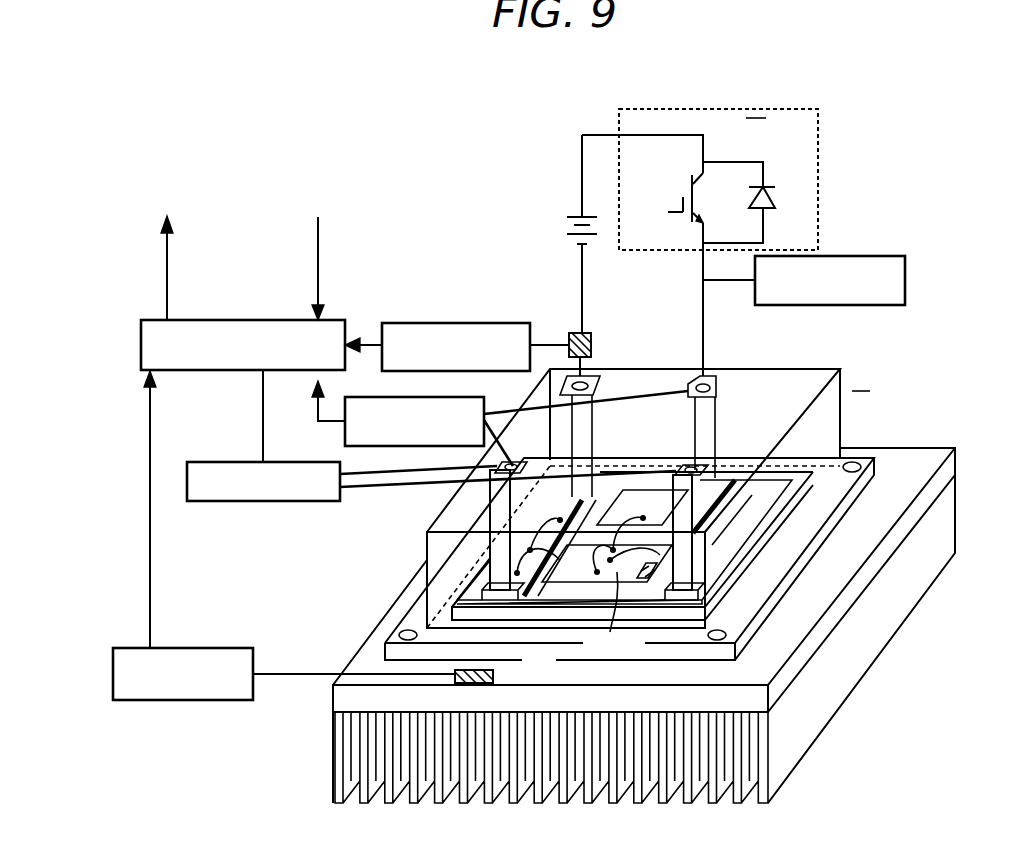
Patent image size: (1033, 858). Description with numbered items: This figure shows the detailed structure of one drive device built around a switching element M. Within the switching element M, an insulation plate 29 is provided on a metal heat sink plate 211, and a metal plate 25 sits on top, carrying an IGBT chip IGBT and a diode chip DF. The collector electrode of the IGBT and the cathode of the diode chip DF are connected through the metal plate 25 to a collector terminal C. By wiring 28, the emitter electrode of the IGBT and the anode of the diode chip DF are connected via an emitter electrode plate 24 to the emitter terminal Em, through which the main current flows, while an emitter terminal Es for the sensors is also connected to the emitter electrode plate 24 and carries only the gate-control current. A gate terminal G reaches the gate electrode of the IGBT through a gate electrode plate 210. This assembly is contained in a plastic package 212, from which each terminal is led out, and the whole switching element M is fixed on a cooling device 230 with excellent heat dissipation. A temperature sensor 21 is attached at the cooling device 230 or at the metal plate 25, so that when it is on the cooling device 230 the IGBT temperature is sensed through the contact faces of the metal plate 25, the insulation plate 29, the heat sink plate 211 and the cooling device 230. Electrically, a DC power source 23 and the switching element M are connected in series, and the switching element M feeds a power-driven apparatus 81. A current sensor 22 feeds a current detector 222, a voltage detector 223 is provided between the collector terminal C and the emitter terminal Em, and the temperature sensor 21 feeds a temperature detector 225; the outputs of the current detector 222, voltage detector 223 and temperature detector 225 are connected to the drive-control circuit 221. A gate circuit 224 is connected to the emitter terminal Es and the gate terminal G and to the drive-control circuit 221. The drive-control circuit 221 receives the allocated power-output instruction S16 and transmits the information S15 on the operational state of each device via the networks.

The information on operational state of each device S15 is at (207, 128).
The allocated power-output instruction S16 is at (337, 143).
The drive-control circuit 221 is at (211, 318).
The current detector 222 is at (411, 322).
The voltage detector 223 is at (345, 423).
The gate circuit 224 is at (217, 502).
The temperature detector 225 is at (225, 648).
The current sensor 22 is at (588, 332).
The DC power source 23 is at (573, 240).
The power-driven apparatus 81 is at (872, 256).
The plastic package 212 is at (785, 368).
The cooling device 230 is at (918, 450).
The insulation plate 29 is at (783, 488).
The gate electrode plate 210 is at (725, 543).
The metal heat sink plate 211 is at (740, 600).
The emitter electrode plate 24 is at (490, 510).
The wiring 28 is at (493, 560).
The metal plate 25 is at (560, 588).
The temperature sensor 21 is at (495, 676).
The collector terminal C is at (707, 376).
The gate terminal G is at (705, 467).
The diode chip DF is at (647, 508).
The emitter terminal Em is at (595, 384).
The emitter terminal for sensors Es is at (498, 465).
The IGBT chip IGBT is at (642, 395).
The switching element M is at (745, 244).